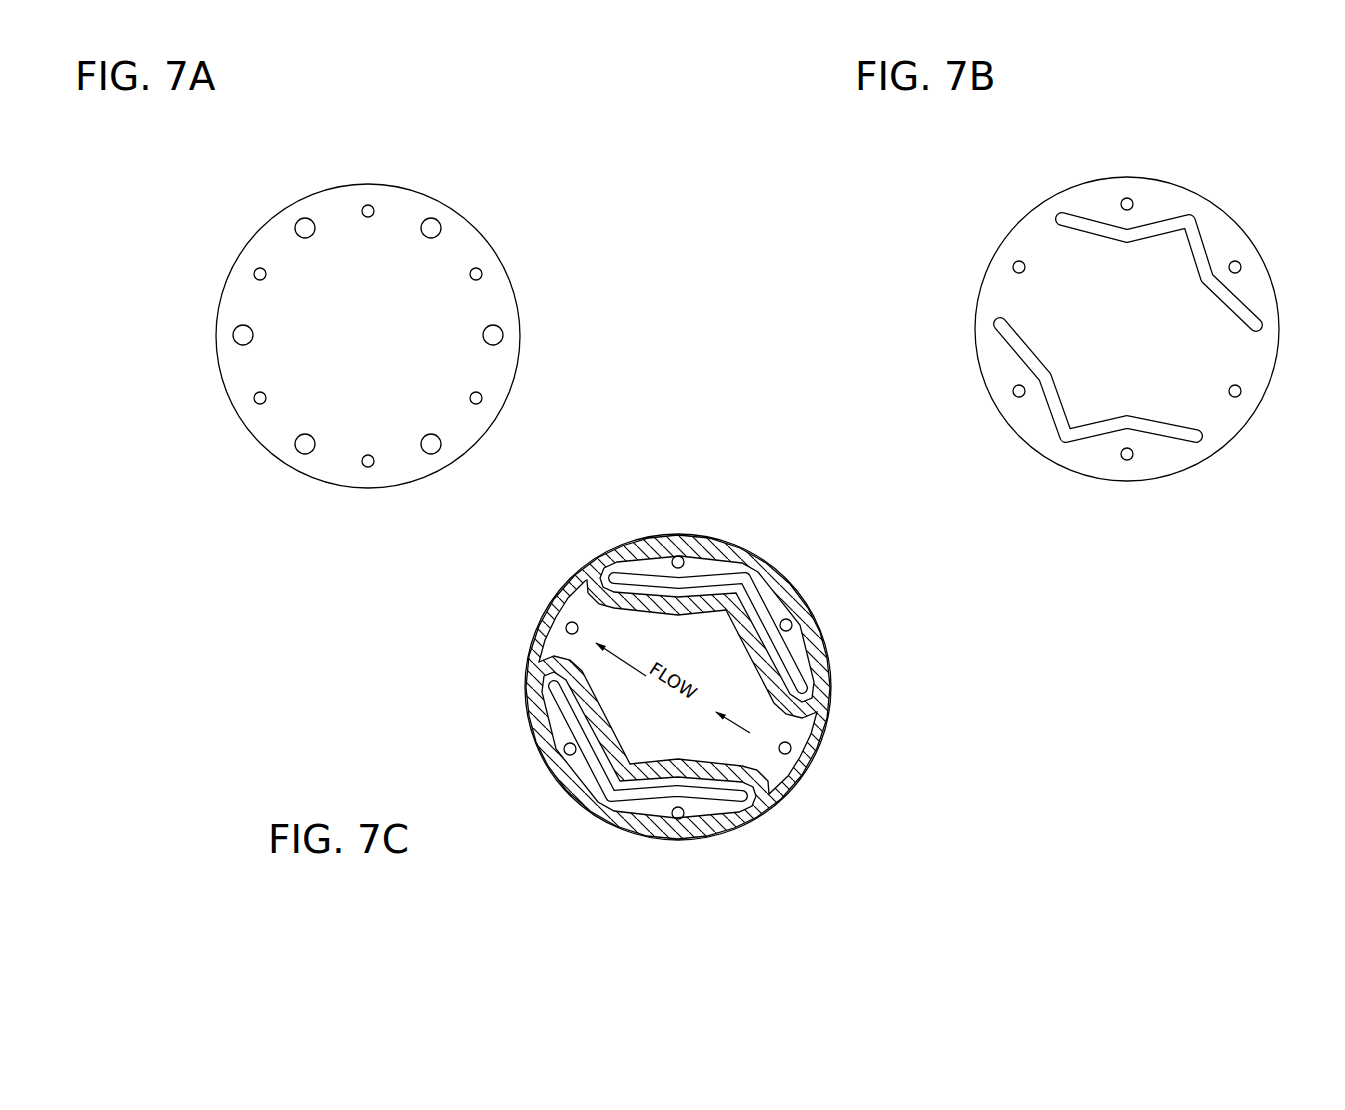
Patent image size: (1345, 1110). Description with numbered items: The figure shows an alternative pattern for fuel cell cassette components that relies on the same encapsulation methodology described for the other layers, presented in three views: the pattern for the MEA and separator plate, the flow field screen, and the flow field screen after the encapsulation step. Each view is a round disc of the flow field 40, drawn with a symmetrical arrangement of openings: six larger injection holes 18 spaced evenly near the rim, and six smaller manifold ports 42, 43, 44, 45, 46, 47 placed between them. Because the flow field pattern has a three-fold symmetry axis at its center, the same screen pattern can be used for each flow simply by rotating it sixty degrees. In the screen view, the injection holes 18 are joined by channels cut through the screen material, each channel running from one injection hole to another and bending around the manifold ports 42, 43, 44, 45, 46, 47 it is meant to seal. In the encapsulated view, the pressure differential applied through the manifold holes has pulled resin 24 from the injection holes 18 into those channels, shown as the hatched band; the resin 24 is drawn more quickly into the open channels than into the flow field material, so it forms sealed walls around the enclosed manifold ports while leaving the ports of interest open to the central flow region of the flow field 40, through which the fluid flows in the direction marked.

In FIG. 7A, the injection holes 18 is at (432, 432).
In FIG. 7B, the injection holes 18 is at (1199, 422).
In FIG. 7C, the injection holes 18 is at (743, 780).
In FIG. 7C, the resin 24 is at (812, 624).
In FIG. 7A, the cooling flow field 40 is at (142, 501).
In FIG. 7B, the cooling flow field 40 is at (1317, 467).
In FIG. 7C, the cooling flow field 40 is at (882, 847).
In FIG. 7A, the port 42 is at (365, 203).
In FIG. 7B, the port 42 is at (1124, 196).
In FIG. 7C, the port 42 is at (674, 551).
In FIG. 7A, the port 43 is at (361, 467).
In FIG. 7B, the port 43 is at (1119, 460).
In FIG. 7C, the port 43 is at (670, 827).
In FIG. 7A, the port 44 is at (482, 267).
In FIG. 7B, the port 44 is at (1240, 259).
In FIG. 7C, the port 44 is at (790, 612).
In FIG. 7A, the port 45 is at (254, 404).
In FIG. 7B, the port 45 is at (1011, 396).
In FIG. 7C, the port 45 is at (561, 758).
In FIG. 7A, the port 46 is at (482, 391).
In FIG. 7B, the port 46 is at (1243, 381).
In FIG. 7C, the port 46 is at (796, 740).
In FIG. 7A, the port 47 is at (252, 279).
In FIG. 7B, the port 47 is at (1010, 272).
In FIG. 7C, the port 47 is at (559, 635).